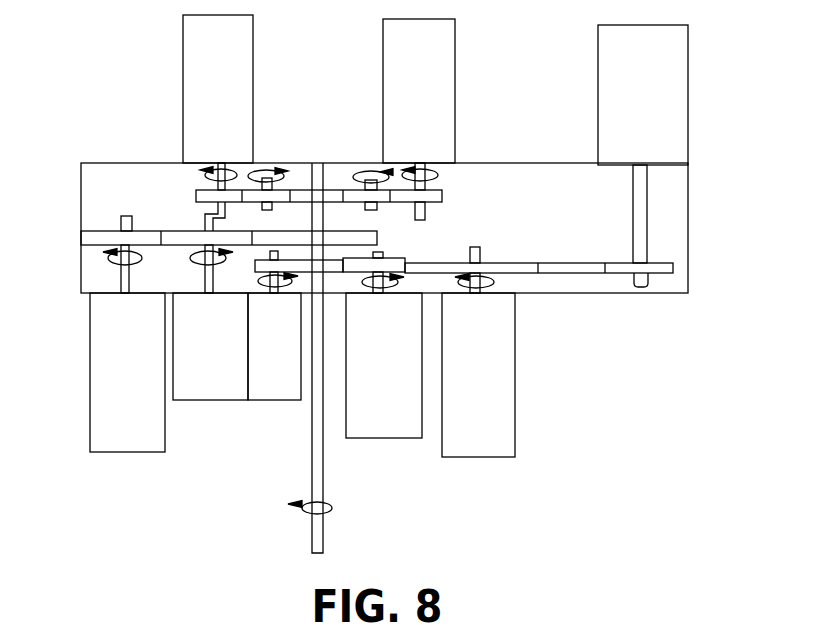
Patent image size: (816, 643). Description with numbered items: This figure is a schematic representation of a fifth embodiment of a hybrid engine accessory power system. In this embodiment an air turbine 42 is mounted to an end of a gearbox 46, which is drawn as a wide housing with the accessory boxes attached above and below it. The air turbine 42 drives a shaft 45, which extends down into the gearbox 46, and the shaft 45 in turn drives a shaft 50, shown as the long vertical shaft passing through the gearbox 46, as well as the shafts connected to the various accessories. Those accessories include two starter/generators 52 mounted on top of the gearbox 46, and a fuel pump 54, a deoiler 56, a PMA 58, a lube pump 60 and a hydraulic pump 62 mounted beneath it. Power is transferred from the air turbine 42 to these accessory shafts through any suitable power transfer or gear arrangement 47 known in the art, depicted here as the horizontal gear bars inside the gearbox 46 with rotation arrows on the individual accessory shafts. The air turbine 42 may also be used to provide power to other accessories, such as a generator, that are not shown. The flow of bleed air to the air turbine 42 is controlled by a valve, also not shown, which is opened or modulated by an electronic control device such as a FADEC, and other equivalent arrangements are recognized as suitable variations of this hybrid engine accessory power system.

The air turbine 42 is at (688, 82).
The shaft 45 is at (647, 226).
The gearbox 46 is at (106, 171).
The power transfer or gear arrangement 47 is at (575, 278).
The shaft 50 is at (323, 533).
The starter/generator 52 is at (183, 93).
The fuel pump 54 is at (515, 357).
The deoiler 56 is at (405, 438).
The PMA 58 is at (269, 400).
The lube pump 60 is at (207, 400).
The hydraulic pump 62 is at (90, 374).